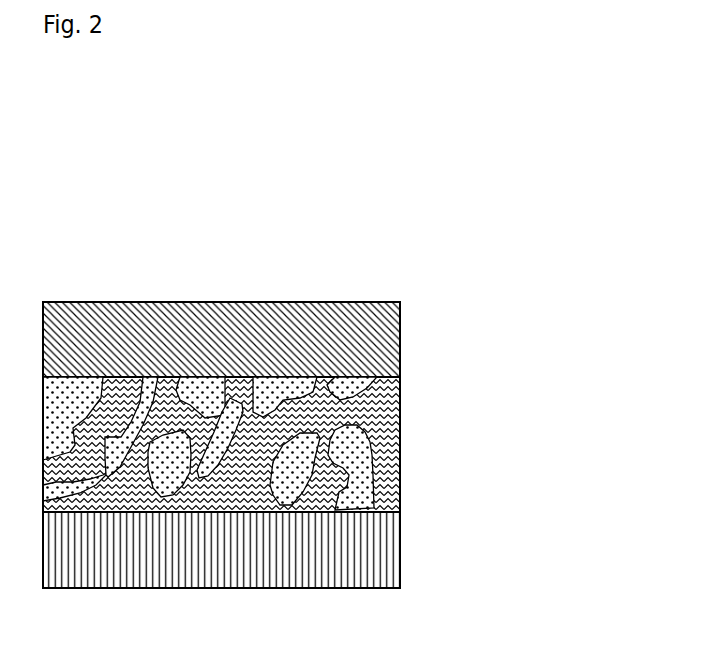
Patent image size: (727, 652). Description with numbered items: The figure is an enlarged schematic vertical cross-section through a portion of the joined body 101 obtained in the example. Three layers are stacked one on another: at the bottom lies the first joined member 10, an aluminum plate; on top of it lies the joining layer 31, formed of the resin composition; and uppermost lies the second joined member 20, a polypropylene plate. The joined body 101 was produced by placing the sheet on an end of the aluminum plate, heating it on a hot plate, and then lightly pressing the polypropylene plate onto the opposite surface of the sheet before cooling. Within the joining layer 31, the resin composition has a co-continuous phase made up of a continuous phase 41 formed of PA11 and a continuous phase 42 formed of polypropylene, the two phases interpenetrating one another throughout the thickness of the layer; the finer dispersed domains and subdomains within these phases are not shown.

The joined body 101 is at (327, 363).
The second joined member 20 is at (383, 348).
The joining layer 31 is at (327, 446).
The continuous phase B 42 is at (300, 412).
The continuous phase A 41 is at (263, 483).
The first joined member 10 is at (377, 573).